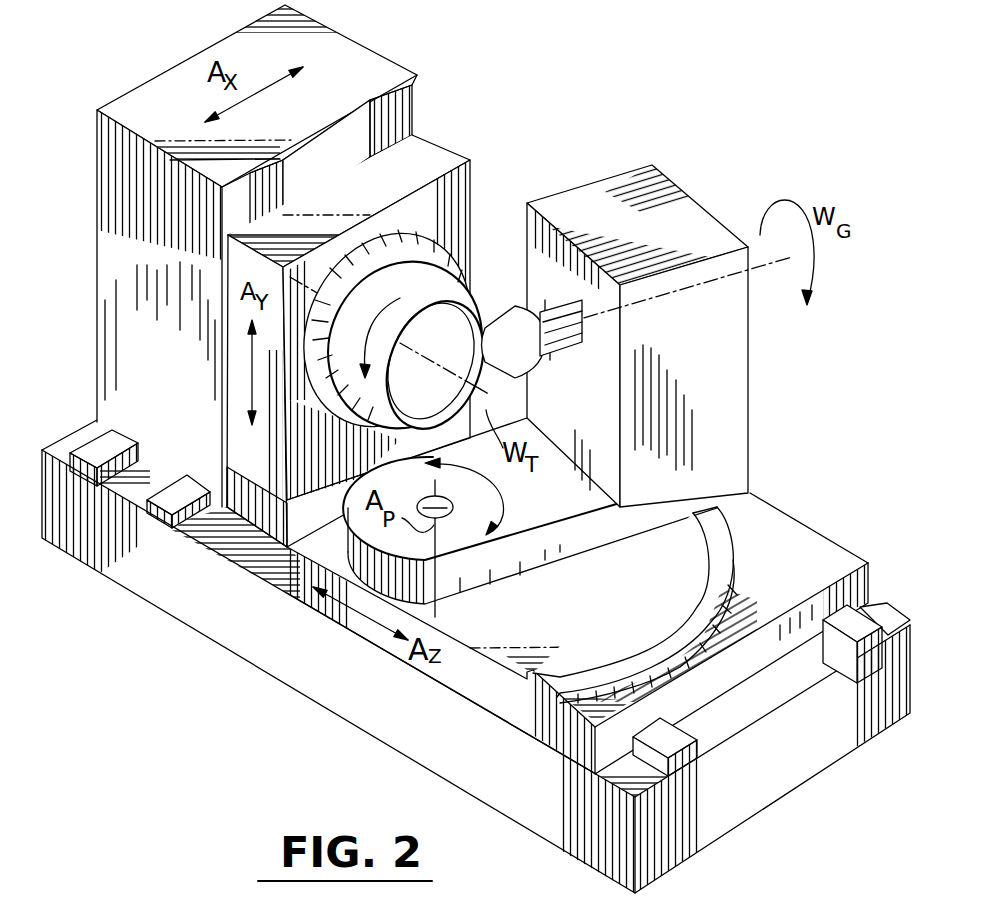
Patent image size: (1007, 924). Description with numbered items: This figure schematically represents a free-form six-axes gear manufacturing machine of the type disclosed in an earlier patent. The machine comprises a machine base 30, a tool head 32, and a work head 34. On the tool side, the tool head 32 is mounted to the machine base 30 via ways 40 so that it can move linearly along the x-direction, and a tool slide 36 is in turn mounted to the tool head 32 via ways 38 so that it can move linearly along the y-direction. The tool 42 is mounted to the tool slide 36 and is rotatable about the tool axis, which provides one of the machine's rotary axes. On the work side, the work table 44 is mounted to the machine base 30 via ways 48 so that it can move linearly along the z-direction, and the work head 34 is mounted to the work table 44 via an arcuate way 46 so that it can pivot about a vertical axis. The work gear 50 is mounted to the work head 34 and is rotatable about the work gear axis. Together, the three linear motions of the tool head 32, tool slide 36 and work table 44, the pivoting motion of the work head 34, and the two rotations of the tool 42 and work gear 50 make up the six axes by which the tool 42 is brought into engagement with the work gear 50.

The machine base 30 is at (348, 676).
The tool head 32 is at (170, 254).
The work head 34 is at (705, 408).
The tool slide 36 is at (452, 160).
The ways 38 is at (413, 117).
The ways 40 is at (180, 497).
The tool 42 is at (462, 276).
The work table 44 is at (510, 647).
The way 46 is at (720, 553).
The ways 48 is at (680, 740).
The work gear 50 is at (533, 377).